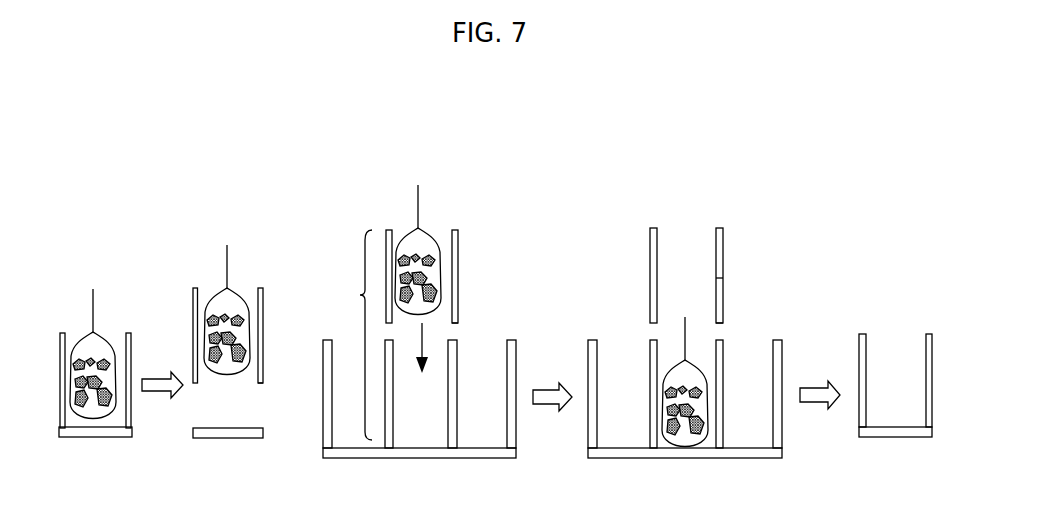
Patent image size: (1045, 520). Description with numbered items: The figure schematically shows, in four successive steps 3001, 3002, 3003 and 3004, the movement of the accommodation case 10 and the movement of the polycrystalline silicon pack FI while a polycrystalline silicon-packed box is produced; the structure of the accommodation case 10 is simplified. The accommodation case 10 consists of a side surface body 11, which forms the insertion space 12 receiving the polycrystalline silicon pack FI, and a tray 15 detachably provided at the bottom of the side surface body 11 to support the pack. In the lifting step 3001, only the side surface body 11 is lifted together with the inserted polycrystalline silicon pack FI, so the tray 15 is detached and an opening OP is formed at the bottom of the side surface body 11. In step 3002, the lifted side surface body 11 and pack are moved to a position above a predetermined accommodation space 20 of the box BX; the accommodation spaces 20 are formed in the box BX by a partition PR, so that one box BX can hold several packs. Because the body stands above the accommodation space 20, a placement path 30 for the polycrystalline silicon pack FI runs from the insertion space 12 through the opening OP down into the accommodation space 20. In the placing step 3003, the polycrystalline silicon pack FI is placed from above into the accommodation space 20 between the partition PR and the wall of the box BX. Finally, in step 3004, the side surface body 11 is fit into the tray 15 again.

The accommodation case 10 is at (63, 327).
The side surface body 11 is at (263, 322).
The insertion space 12 is at (693, 278).
The tray 15 is at (230, 433).
The accommodation space 20 is at (423, 430).
The placement path 30 is at (360, 295).
The lifting step 3001 is at (160, 205).
The step of forming placement path 3002 is at (417, 127).
The placing step 3003 is at (686, 128).
The refitting step 3004 is at (880, 205).
The polycrystalline silicon pack FI is at (105, 332).
The opening OP is at (263, 383).
The partition PR is at (389, 443).
The box BX is at (482, 453).